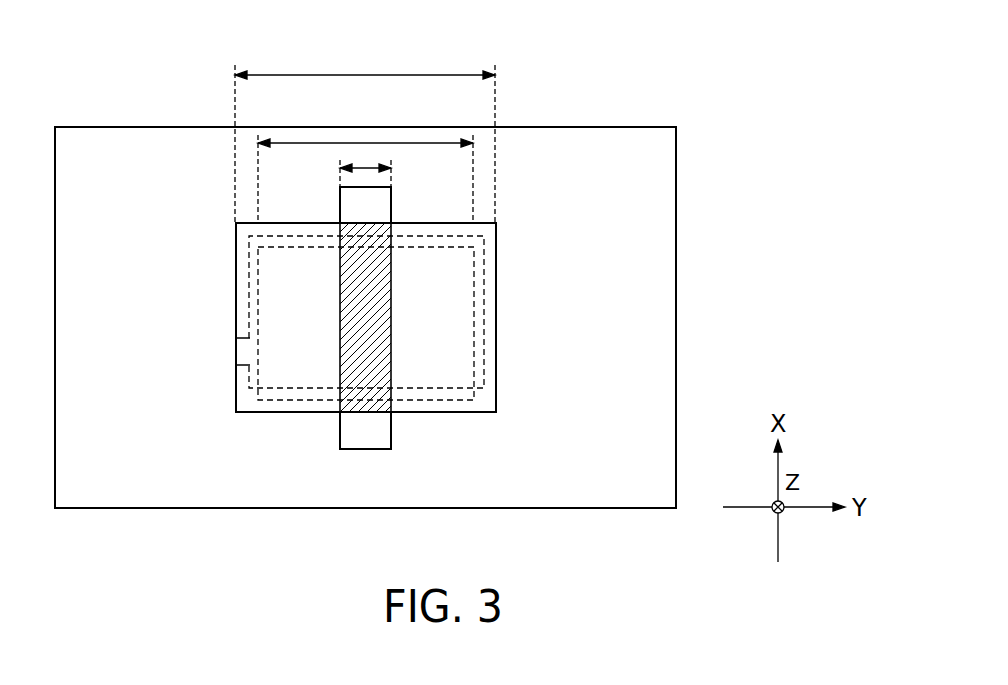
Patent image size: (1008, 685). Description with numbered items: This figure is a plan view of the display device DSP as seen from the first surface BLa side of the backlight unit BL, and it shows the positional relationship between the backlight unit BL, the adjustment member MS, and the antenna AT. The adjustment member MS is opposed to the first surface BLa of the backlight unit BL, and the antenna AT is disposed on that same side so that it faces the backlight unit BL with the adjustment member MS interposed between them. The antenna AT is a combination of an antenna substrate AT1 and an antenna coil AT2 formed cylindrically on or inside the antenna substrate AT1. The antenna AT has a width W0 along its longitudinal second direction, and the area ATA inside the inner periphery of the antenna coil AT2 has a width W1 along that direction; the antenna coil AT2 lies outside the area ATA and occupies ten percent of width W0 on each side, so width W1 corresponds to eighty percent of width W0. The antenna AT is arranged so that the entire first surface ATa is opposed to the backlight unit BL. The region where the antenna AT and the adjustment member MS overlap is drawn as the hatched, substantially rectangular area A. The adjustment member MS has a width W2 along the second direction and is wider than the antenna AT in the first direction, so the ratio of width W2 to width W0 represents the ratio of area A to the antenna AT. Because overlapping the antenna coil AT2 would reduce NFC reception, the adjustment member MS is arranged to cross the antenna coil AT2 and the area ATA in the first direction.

The backlight unit BL is at (660, 449).
The first surface BLa is at (654, 368).
The display device DSP is at (657, 106).
The antenna substrate AT1 is at (497, 357).
The antenna coil AT2 is at (441, 400).
The antenna AT is at (487, 415).
The area inside the inner periphery of the antenna coil ATA is at (249, 308).
The first surface of the antenna ATa is at (478, 277).
The area A is at (385, 319).
The adjustment member MS is at (365, 433).
The width W0 is at (369, 75).
The width W1 is at (330, 143).
The width W2 is at (366, 168).